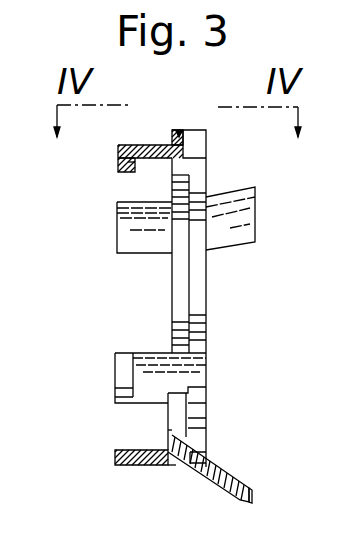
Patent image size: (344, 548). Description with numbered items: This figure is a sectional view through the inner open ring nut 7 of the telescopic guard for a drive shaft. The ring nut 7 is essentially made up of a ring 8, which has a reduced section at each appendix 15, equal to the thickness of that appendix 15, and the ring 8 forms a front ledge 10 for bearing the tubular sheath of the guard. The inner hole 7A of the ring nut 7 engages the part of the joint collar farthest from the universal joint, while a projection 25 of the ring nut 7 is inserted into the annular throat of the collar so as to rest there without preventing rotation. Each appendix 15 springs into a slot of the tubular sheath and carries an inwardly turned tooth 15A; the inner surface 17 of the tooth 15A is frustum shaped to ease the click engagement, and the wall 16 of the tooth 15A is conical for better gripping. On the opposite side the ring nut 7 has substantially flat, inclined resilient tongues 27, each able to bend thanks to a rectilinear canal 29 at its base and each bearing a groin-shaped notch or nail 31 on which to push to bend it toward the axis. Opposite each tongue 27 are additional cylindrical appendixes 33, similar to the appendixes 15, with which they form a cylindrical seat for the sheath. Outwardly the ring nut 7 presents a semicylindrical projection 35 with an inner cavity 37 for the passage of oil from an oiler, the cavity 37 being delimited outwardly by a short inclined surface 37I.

The inner open ring nut 7 is at (207, 272).
The inner hole 7A is at (170, 430).
The ring 8 is at (173, 466).
The front ledge 10 is at (167, 167).
The appendix 15 is at (150, 145).
The tooth 15A is at (118, 155).
The wall of the tooth 16 is at (135, 145).
The inner surface of the tooth 17 is at (126, 172).
The projection 25 is at (179, 428).
The resilient tongue 27 is at (253, 205).
The rectilinear canal 29 is at (206, 460).
The groin-shaped notch or nail 31 is at (242, 502).
The cylindrical appendix 33 is at (122, 467).
The semicylindrical projection 35 is at (172, 133).
The cavity 37 is at (195, 145).
The short inclined surface 37I is at (180, 132).